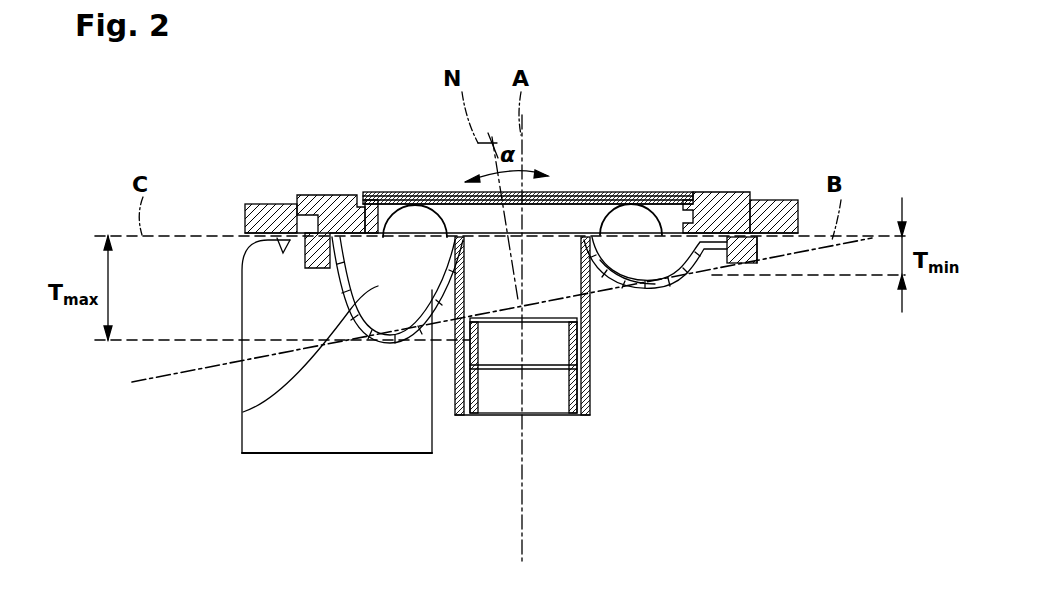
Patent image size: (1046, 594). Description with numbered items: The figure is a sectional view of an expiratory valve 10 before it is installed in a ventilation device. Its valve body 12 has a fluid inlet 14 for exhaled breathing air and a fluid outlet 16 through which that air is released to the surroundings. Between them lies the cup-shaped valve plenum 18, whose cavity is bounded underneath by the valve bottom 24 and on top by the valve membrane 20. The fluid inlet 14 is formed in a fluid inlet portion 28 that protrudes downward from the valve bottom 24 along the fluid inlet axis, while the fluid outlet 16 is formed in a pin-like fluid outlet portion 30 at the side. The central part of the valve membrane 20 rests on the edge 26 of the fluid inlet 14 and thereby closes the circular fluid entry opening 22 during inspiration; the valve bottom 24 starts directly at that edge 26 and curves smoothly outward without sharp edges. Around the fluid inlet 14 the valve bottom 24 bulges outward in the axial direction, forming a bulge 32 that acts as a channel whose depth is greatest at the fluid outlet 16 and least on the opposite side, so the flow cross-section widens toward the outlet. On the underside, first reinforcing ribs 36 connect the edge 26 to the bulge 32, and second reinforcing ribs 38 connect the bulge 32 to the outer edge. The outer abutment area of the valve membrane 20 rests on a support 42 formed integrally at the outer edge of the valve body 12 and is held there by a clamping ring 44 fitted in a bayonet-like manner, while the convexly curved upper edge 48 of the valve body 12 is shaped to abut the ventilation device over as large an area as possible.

The expiratory valve 10 is at (814, 100).
The valve body 12 is at (743, 253).
The fluid inlet 14 is at (550, 392).
The fluid outlet 16 is at (353, 433).
The valve plenum 18 is at (653, 252).
The valve membrane 20 is at (654, 198).
The fluid entry opening 22 is at (560, 240).
The valve bottom 24 is at (618, 292).
The edge of the fluid inlet 26 is at (442, 220).
The fluid inlet portion 28 is at (477, 392).
The fluid outlet portion 30 is at (262, 292).
The bulge 32 is at (245, 410).
The first reinforcing ribs 36 is at (598, 238).
The second reinforcing ribs 38 is at (324, 210).
The support 42 is at (362, 210).
The clamping ring 44 is at (681, 202).
The upper edge of the valve body 48 is at (255, 203).